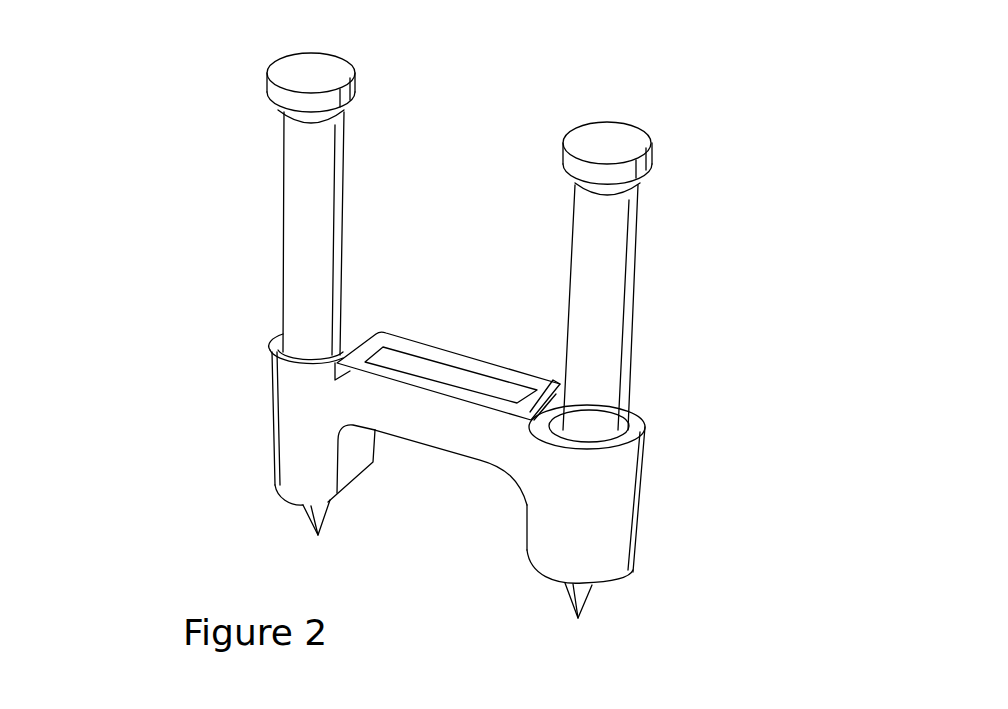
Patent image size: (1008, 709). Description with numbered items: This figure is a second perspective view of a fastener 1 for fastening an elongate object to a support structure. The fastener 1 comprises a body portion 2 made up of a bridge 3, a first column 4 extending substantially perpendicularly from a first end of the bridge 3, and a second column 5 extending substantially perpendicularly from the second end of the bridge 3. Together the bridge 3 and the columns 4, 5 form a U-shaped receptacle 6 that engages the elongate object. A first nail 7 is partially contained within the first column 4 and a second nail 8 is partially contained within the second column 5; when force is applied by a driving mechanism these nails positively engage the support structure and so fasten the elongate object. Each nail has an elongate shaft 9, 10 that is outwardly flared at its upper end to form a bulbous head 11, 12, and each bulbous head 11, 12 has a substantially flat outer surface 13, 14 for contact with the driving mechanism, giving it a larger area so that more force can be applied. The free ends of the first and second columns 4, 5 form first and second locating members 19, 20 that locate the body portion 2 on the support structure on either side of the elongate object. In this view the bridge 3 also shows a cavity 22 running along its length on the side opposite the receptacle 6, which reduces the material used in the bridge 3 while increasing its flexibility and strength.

The fastener 1 is at (155, 131).
The body portion 2 is at (487, 331).
The bridge 3 is at (455, 422).
The first column 4 is at (298, 408).
The second column 5 is at (610, 515).
The U-shaped receptacle 6 is at (469, 482).
The first nail 7 is at (264, 307).
The second nail 8 is at (639, 393).
The elongate shaft 9 is at (327, 195).
The elongate shaft 10 is at (603, 305).
The bulbous head 11 is at (277, 93).
The bulbous head 12 is at (638, 172).
The flat outer surface 13 is at (317, 70).
The flat outer surface 14 is at (597, 138).
The first locating member 19 is at (297, 472).
The second locating member 20 is at (610, 570).
The cavity 22 is at (405, 358).